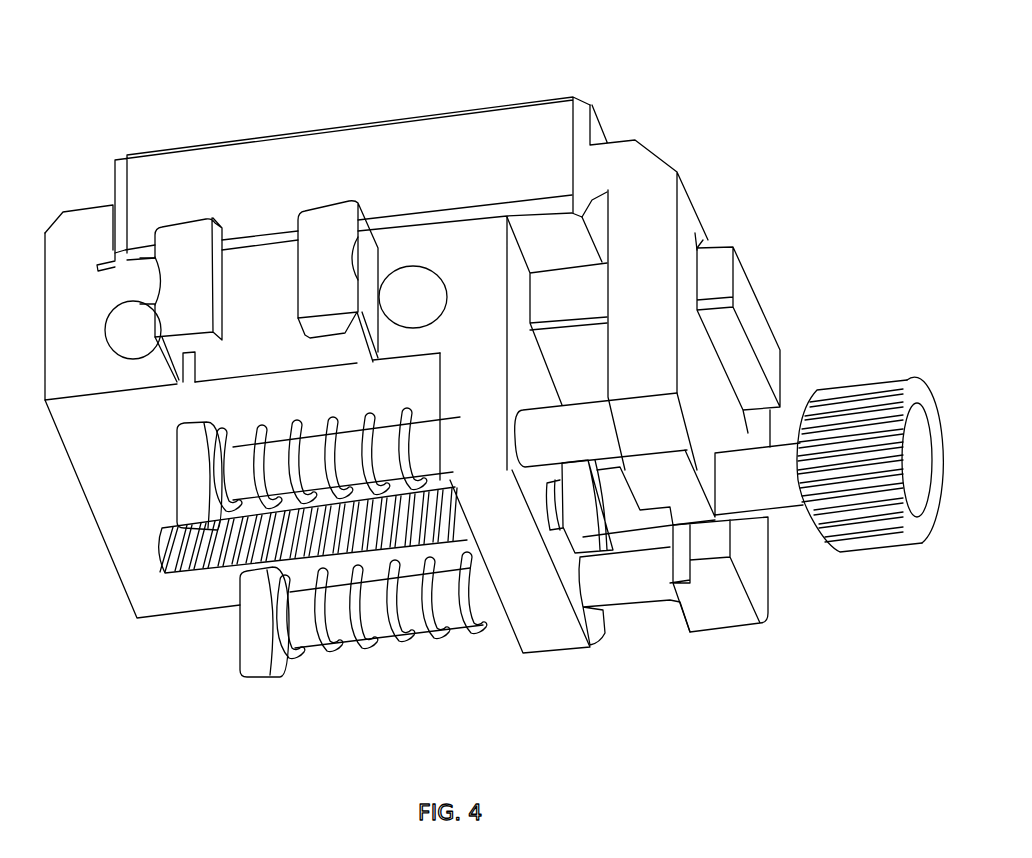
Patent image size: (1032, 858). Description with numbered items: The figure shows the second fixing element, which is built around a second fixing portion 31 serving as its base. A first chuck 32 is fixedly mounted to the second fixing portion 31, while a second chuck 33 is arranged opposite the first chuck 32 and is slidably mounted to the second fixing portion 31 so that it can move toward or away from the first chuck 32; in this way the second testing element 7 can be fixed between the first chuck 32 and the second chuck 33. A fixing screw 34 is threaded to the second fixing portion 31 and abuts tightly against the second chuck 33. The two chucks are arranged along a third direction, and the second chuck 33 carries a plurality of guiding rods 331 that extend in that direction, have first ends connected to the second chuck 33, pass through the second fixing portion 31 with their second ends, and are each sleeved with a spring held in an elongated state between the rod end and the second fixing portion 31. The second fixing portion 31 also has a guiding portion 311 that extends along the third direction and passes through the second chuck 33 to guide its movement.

The second testing element 7 is at (385, 172).
The second fixing portion 31 is at (140, 462).
The first chuck 32 is at (87, 233).
The second chuck 33 is at (725, 595).
The fixing screw 34 is at (203, 553).
The guiding portion 311 is at (753, 320).
The guiding rod 331 is at (633, 583).